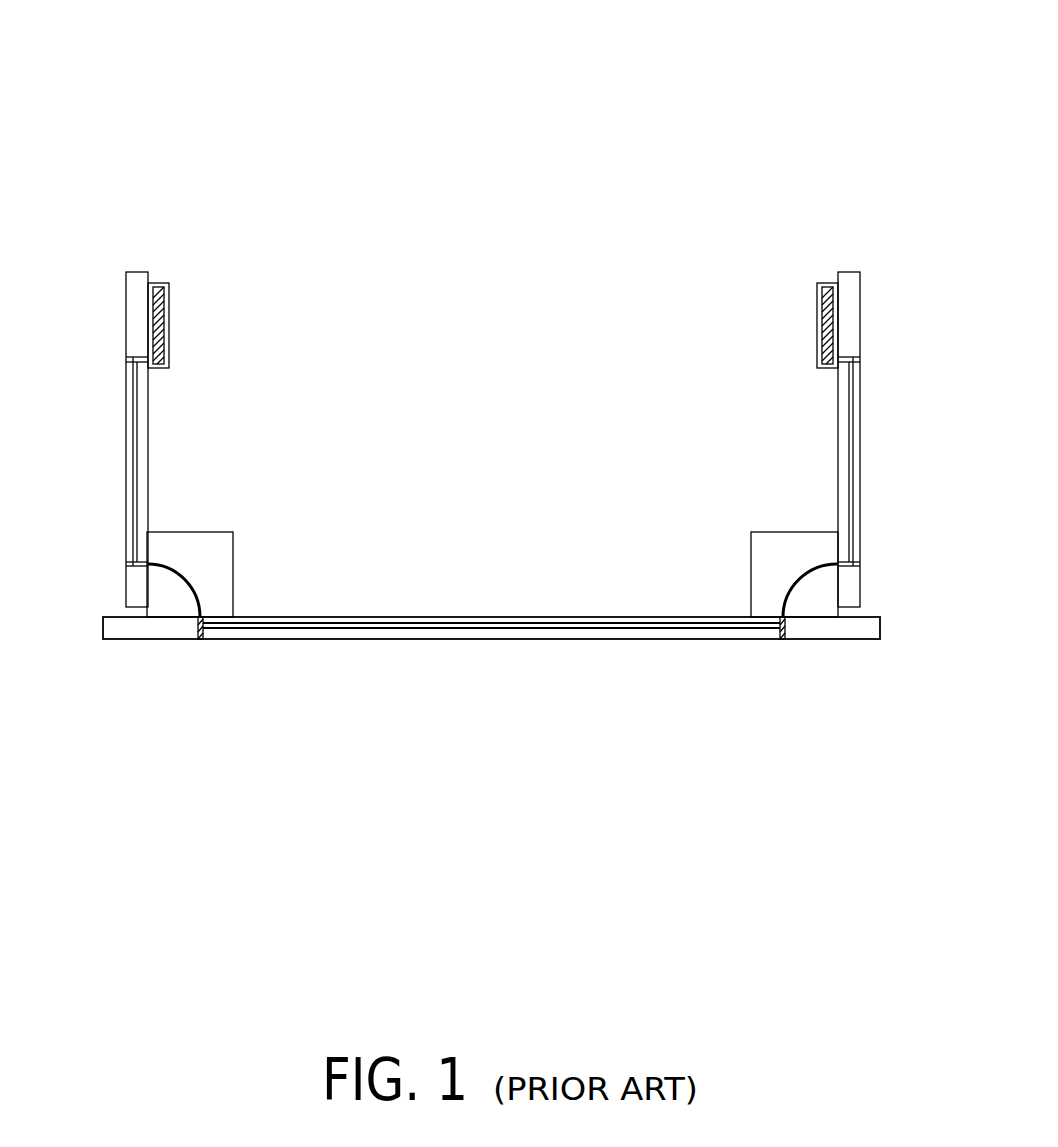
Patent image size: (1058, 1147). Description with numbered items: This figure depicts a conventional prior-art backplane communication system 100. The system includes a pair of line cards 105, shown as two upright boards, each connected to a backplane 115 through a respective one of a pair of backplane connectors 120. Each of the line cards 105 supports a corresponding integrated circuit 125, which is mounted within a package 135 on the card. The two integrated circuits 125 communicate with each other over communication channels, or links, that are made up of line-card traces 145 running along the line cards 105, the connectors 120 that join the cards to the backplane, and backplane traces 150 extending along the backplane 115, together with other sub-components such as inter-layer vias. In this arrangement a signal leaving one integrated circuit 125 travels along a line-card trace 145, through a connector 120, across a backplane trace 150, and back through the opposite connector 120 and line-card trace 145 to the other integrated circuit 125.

The backplane communication system 100 is at (814, 70).
The line card 105 is at (126, 316).
The backplane 115 is at (405, 617).
The backplane connector 120 is at (217, 532).
The integrated circuit 125 is at (151, 283).
The package 135 is at (157, 370).
The line-card trace 145 is at (135, 423).
The backplane trace 150 is at (318, 630).